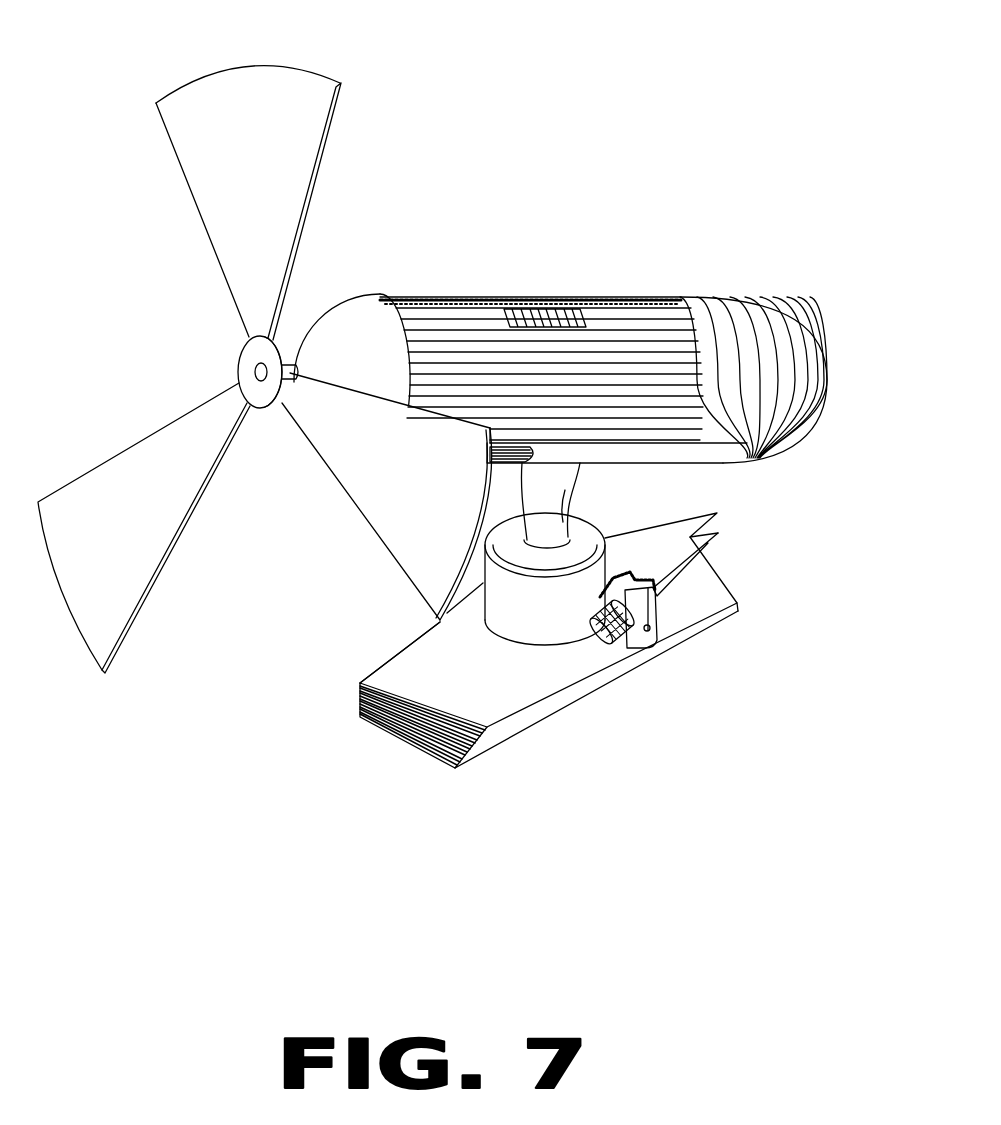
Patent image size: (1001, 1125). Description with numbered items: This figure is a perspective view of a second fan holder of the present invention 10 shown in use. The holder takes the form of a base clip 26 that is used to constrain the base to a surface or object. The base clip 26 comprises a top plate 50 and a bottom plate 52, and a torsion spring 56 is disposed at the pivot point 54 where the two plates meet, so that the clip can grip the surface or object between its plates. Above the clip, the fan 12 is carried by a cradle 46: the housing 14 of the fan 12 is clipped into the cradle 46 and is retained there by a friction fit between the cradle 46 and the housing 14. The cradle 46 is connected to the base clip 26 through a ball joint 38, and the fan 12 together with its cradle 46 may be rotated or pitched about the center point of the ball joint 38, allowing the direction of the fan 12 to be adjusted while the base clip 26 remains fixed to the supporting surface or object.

The present invention 10 is at (692, 147).
The fan 12 is at (624, 318).
The housing 14 is at (463, 296).
The base clip 26 is at (690, 606).
The ball joint 38 is at (573, 548).
The cradle 46 is at (677, 463).
The top plate 50 is at (422, 631).
The bottom plate 52 is at (560, 712).
The pivot point 54 is at (647, 633).
The torsion spring 56 is at (612, 622).